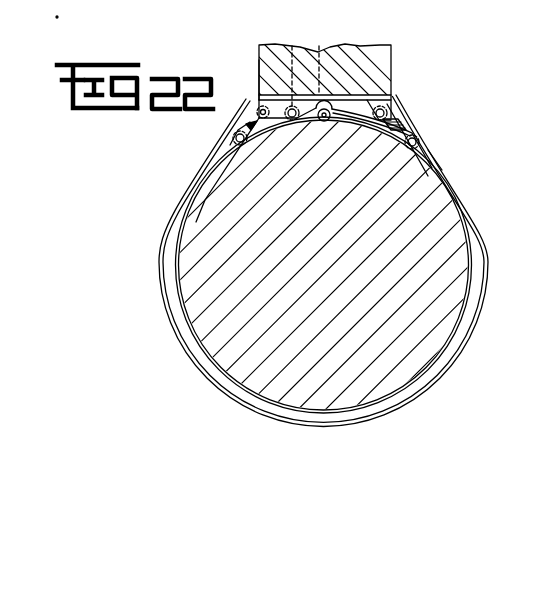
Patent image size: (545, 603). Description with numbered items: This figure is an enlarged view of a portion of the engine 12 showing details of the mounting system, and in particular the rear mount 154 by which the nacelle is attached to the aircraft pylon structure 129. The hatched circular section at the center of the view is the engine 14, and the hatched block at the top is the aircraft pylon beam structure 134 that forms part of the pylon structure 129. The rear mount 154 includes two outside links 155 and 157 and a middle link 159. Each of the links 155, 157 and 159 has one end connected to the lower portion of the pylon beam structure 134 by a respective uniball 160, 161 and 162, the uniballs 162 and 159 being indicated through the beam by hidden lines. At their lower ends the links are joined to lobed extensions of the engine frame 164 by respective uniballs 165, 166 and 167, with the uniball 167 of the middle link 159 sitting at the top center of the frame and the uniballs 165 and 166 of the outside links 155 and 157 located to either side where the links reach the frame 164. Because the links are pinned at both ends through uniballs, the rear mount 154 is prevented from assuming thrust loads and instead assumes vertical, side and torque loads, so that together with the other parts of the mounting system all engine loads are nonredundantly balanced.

The cylinder 14 is at (442, 223).
The rear mount 154 is at (432, 118).
The aircraft pylon structure 129 is at (392, 47).
The pylon beam structure 134 is at (374, 92).
The uniball 167 is at (324, 121).
The uniball 165 is at (232, 139).
The uniball 166 is at (420, 142).
The outside link 155 is at (247, 123).
The outside link 157 is at (410, 121).
The uniball 161 is at (403, 101).
The engine frame 164 is at (424, 155).
The uniball 160 is at (257, 100).
The uniball 162 is at (293, 46).
The middle link 159 is at (320, 46).
The apparatus 12 is at (392, 4).